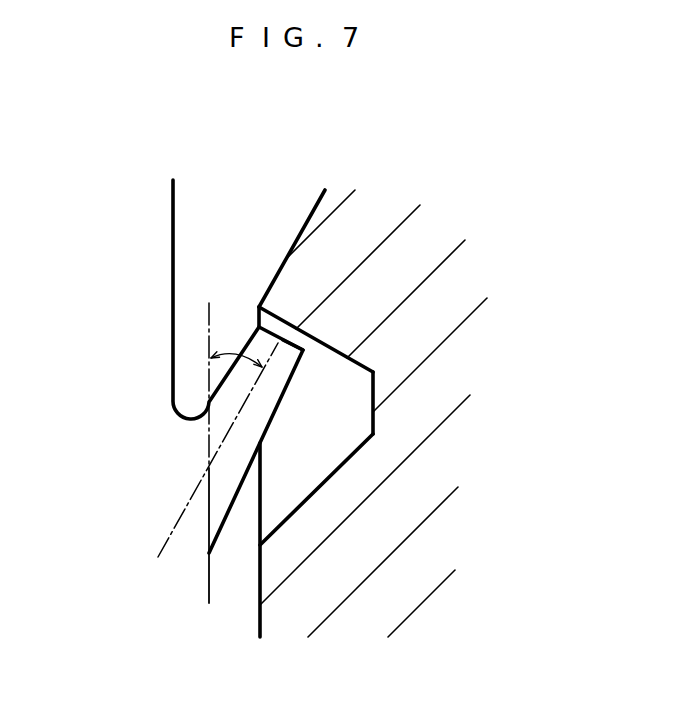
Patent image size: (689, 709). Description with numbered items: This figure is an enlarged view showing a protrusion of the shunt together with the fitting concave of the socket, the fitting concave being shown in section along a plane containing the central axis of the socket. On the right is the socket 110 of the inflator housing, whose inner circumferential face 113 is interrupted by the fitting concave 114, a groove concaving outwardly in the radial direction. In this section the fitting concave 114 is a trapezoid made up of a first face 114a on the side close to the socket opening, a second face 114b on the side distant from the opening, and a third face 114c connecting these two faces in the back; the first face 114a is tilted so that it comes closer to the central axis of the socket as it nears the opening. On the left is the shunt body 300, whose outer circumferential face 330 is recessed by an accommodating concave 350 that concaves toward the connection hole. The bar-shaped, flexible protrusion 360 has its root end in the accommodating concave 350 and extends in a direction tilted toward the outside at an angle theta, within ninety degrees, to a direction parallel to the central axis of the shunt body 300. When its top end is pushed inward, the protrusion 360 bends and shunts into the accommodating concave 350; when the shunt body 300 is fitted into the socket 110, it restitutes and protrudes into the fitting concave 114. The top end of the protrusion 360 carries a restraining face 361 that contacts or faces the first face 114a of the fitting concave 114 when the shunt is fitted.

The shunt body 300 is at (132, 195).
The accommodating concave 350 is at (172, 370).
The outer circumferential face 330 is at (209, 601).
The protrusion 360 is at (253, 430).
The restraining face 361 is at (293, 345).
The socket 110 is at (495, 228).
The inner circumferential face 113 is at (325, 195).
The fitting concave 114 is at (582, 318).
The first face 114a is at (357, 364).
The third face 114c is at (373, 393).
The second face 114b is at (346, 462).